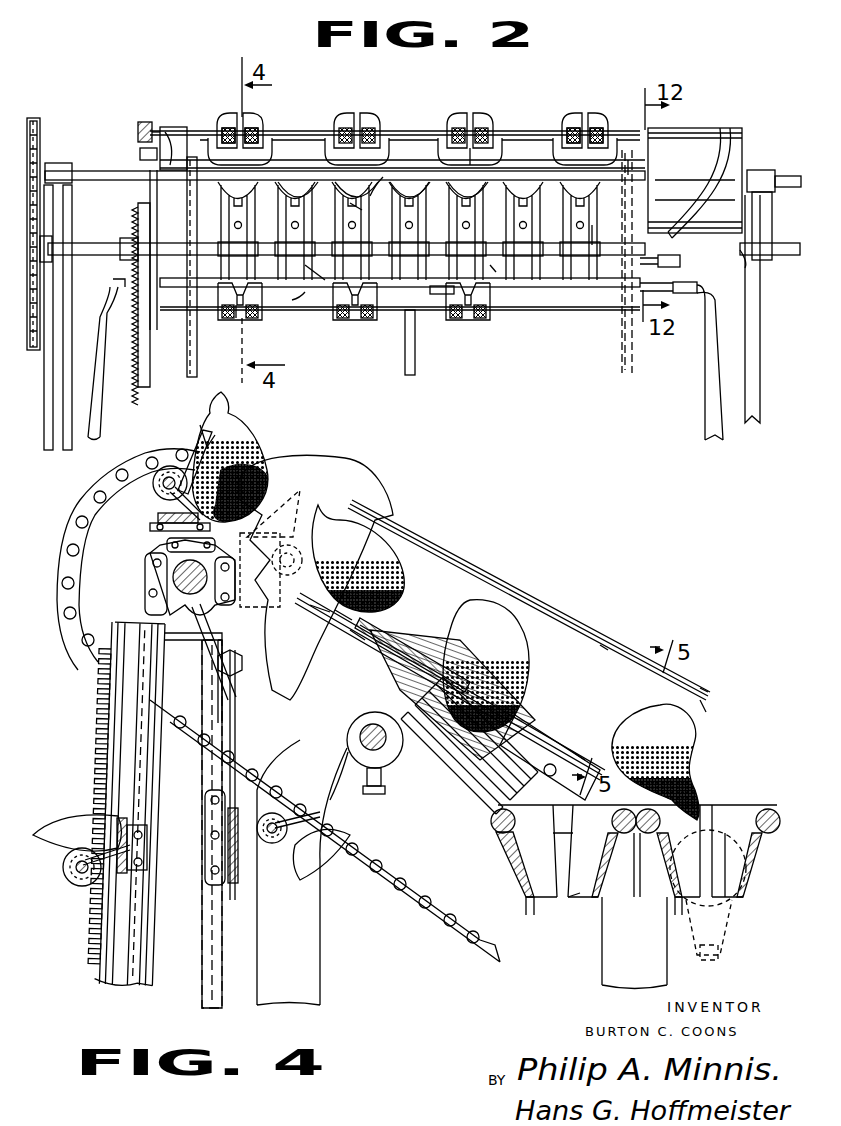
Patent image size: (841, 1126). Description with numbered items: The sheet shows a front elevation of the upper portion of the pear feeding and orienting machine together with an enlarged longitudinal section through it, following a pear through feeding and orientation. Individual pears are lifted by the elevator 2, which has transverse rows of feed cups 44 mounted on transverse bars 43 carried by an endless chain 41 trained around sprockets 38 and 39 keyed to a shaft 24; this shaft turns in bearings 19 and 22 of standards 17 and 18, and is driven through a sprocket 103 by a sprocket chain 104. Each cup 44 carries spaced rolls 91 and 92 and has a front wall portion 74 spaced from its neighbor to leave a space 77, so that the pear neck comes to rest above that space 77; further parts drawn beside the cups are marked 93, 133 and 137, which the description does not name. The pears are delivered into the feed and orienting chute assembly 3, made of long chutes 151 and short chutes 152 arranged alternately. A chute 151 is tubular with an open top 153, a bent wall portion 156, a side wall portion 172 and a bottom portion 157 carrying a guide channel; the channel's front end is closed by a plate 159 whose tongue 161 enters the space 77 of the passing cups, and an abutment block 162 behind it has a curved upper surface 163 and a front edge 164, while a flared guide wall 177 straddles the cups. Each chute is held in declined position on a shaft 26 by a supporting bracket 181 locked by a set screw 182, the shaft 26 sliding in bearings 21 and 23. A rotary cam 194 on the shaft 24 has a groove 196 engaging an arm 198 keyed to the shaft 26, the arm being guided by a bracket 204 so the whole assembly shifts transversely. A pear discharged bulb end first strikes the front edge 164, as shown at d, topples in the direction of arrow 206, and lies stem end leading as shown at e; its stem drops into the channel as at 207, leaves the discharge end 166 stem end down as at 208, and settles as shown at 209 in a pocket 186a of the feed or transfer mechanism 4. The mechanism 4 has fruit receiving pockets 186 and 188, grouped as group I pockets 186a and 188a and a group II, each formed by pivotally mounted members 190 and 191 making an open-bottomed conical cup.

In FIG. 2, the elevator 2 is at (484, 114).
In FIG. 4, the elevator 2 is at (88, 895).
In FIG. 2, the feed and orienting chute assembly 3 is at (492, 270).
In FIG. 4, the feed and orienting chute assembly 3 is at (696, 690).
In FIG. 2, the feed or transfer mechanism 4 is at (672, 290).
In FIG. 4, the feed or transfer mechanism 4 is at (498, 843).
In FIG. 2, the standard 17 is at (62, 430).
In FIG. 4, the standard 17 is at (305, 955).
In FIG. 2, the standard 18 is at (752, 388).
In FIG. 2, the bearing 19 is at (62, 163).
In FIG. 2, the bearing 21 is at (78, 241).
In FIG. 4, the bearing 21 is at (400, 748).
In FIG. 2, the bearing 22 is at (765, 170).
In FIG. 2, the bearing 23 is at (770, 242).
In FIG. 2, the shaft 24 is at (135, 171).
In FIG. 4, the shaft 24 is at (173, 575).
In FIG. 2, the shaft 26 is at (125, 283).
In FIG. 4, the shaft 26 is at (356, 724).
In FIG. 2, the sprocket 38 is at (178, 160).
In FIG. 2, the sprocket 39 is at (630, 160).
In FIG. 4, the endless chain 41 is at (228, 586).
In FIG. 2, the transverse bar 43 is at (385, 185).
In FIG. 4, the transverse bar 43 is at (150, 527).
In FIG. 2, the feed cup 44 is at (368, 115).
In FIG. 4, the feed cup 44 is at (190, 442).
In FIG. 4, the front wall portion 74 is at (193, 442).
In FIG. 2, the space 77 is at (237, 112).
In FIG. 4, the roll 91 is at (170, 466).
In FIG. 2, the roll 92 is at (244, 318).
In FIG. 4, the link plate 93 is at (191, 545).
In FIG. 2, the sprocket 103 is at (38, 132).
In FIG. 4, the sprocket 103 is at (110, 520).
In FIG. 2, the sprocket chain 104 is at (38, 340).
In FIG. 4, the sprocket chain 104 is at (83, 640).
In FIG. 4, the rack 133 is at (124, 540).
In FIG. 4, the guide plate 137 is at (550, 757).
In FIG. 2, the feed and orienting chute 151 is at (592, 228).
In FIG. 4, the feed and orienting chute 151 is at (522, 593).
In FIG. 2, the feed and orienting chute 152 is at (292, 178).
In FIG. 4, the feed and orienting chute 152 is at (500, 768).
In FIG. 4, the open top 153 is at (578, 752).
In FIG. 4, the wall portion 156 is at (605, 650).
In FIG. 2, the bottom portion 157 is at (395, 180).
In FIG. 4, the plate 159 is at (347, 617).
In FIG. 2, the tongue 161 is at (362, 210).
In FIG. 4, the tongue 161 is at (322, 608).
In FIG. 4, the abutment block 162 is at (362, 638).
In FIG. 4, the upper surface 163 is at (405, 642).
In FIG. 4, the front edge 164 is at (372, 626).
In FIG. 4, the discharge end 166 is at (704, 712).
In FIG. 4, the side wall portion 172 is at (581, 688).
In FIG. 4, the guide wall 177 is at (305, 468).
In FIG. 2, the supporting bracket 181 is at (312, 272).
In FIG. 4, the supporting bracket 181 is at (452, 695).
In FIG. 2, the set screw 182 is at (432, 290).
In FIG. 4, the set screw 182 is at (368, 772).
In FIG. 4, the fruit receiving pocket 186 is at (747, 818).
In FIG. 4, the pocket 186a is at (672, 875).
In FIG. 4, the fruit receiving pocket 188 is at (518, 866).
In FIG. 4, the pocket 188a is at (525, 890).
In FIG. 4, the pivotally mounted member 190 is at (745, 878).
In FIG. 4, the pivotally mounted member 191 is at (510, 853).
In FIG. 2, the rotary cam 194 is at (695, 180).
In FIG. 2, the groove 196 is at (712, 140).
In FIG. 2, the arm 198 is at (670, 262).
In FIG. 2, the guide bracket 204 is at (700, 287).
In FIG. 4, the arrow 206 is at (445, 568).
In FIG. 4, the stem end position 207 is at (476, 738).
In FIG. 4, the pear discharge position 208 is at (688, 762).
In FIG. 4, the pear in pocket 209 is at (708, 895).
In FIG. 4, the pear position d is at (395, 542).
In FIG. 4, the pear position e is at (508, 645).
In FIG. 4, the group I is at (735, 808).
In FIG. 4, the group II is at (580, 892).